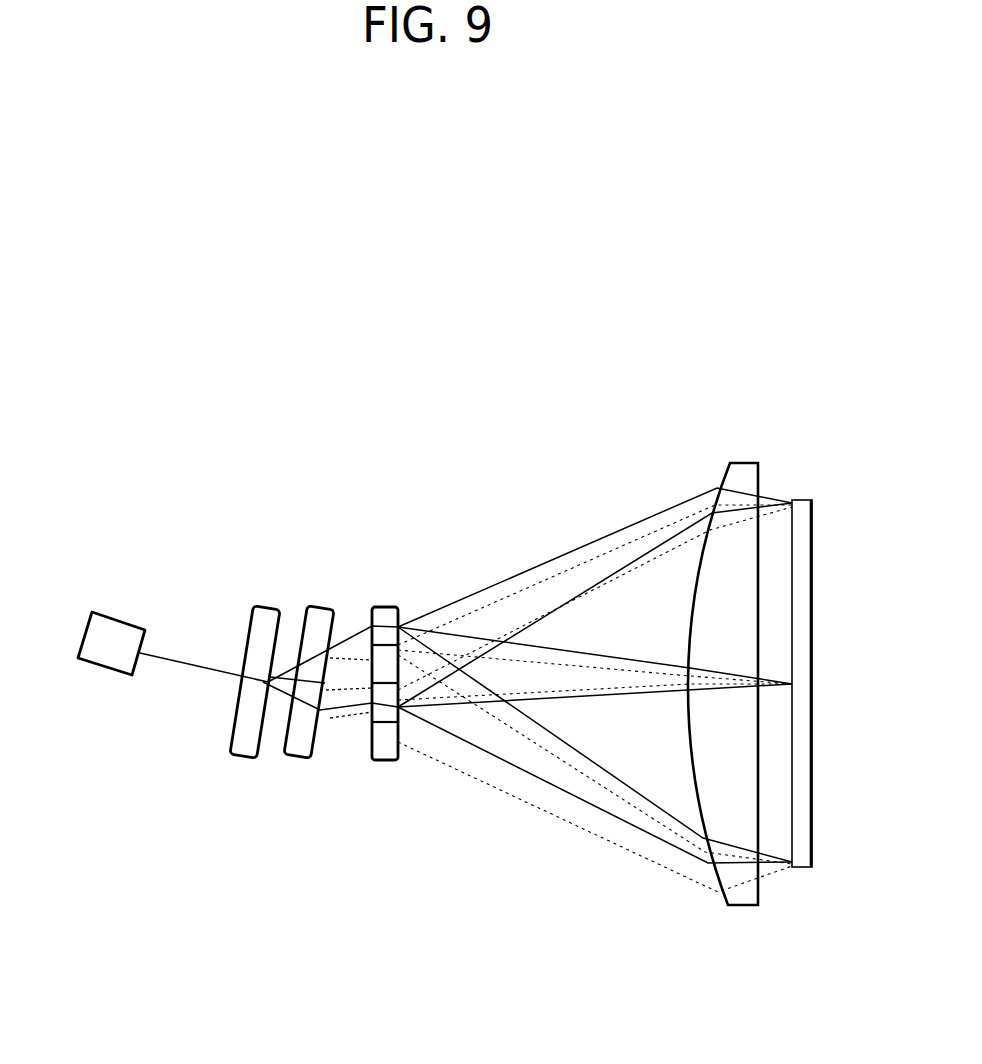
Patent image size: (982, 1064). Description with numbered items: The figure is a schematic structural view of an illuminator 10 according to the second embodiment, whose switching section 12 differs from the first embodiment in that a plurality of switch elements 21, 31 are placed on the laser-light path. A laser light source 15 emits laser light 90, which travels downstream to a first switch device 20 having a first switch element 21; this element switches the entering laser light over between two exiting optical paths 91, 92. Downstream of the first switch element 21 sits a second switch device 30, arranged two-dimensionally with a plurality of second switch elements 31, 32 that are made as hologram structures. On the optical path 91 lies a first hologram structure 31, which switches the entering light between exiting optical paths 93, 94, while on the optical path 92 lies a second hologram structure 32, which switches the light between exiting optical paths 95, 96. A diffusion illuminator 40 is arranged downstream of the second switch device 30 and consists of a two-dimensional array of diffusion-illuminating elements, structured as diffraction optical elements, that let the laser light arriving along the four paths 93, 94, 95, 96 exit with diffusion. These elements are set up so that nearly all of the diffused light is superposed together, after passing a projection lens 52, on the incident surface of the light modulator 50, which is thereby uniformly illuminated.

The projector 10 is at (128, 376).
The illumination optical unit 12 is at (400, 479).
The laser light source 15 is at (103, 668).
The first switch device 20 is at (222, 742).
The first switch element 21 is at (238, 715).
The second switch device 30 is at (293, 758).
The first hologram structure 31 is at (309, 745).
The second hologram structure 32 is at (318, 605).
The diffusion illuminator 40 is at (386, 762).
The light modulator 50 is at (806, 500).
The projection lens 52 is at (745, 462).
The laser light 90 is at (177, 660).
The exiting optical path 91 is at (273, 700).
The exiting optical path 92 is at (286, 665).
The exiting optical path 93 is at (356, 722).
The exiting optical path 94 is at (340, 715).
The exiting optical path 95 is at (361, 652).
The exiting optical path 96 is at (340, 640).